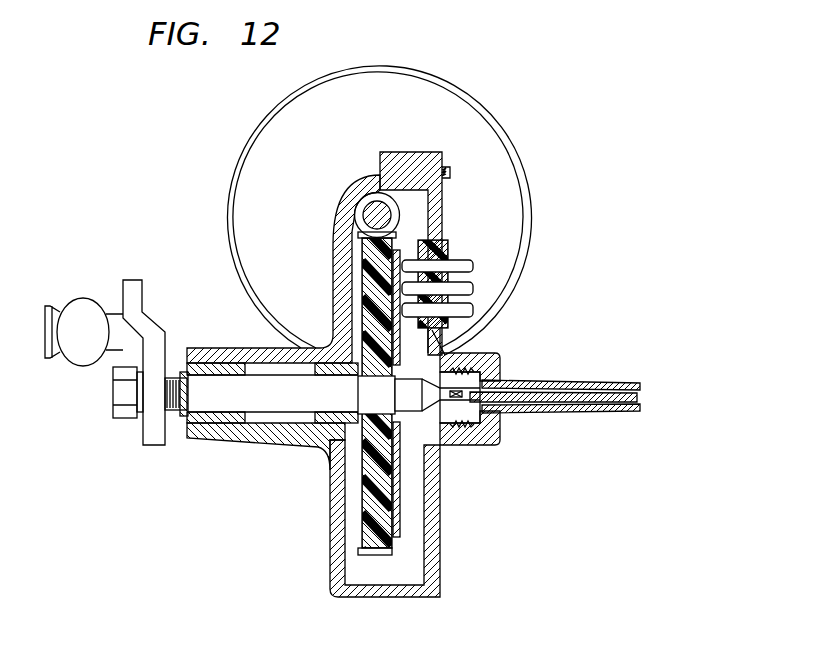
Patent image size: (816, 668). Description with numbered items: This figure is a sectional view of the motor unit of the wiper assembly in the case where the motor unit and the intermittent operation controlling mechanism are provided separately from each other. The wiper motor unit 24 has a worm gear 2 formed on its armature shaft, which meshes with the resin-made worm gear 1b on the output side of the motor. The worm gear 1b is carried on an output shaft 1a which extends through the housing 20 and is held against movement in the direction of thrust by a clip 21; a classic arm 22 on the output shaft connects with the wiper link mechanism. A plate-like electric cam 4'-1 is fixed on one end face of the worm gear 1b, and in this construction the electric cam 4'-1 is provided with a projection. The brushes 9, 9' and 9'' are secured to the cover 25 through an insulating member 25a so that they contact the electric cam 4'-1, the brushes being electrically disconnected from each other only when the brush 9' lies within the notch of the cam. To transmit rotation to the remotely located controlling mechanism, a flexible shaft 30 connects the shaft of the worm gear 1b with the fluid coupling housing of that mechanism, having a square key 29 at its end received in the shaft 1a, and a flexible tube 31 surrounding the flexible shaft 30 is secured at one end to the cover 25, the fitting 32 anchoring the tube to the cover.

The output shaft 1a is at (258, 408).
The worm gear 1b is at (362, 522).
The worm gear 2 is at (366, 206).
The electric cam 4'-1 is at (427, 403).
The brush 9 is at (454, 281).
The brush 9' is at (457, 252).
The brush 9'' is at (472, 311).
The housing 20 is at (367, 592).
The clip 21 is at (185, 426).
The classic arm 22 is at (85, 366).
The wiper motor unit 24 is at (483, 130).
The cover 25 is at (437, 558).
The insulating member 25a is at (447, 245).
The square key 29 is at (505, 412).
The flexible shaft 30 is at (618, 383).
The flexible tube 31 is at (537, 382).
The fitting 32 is at (482, 448).